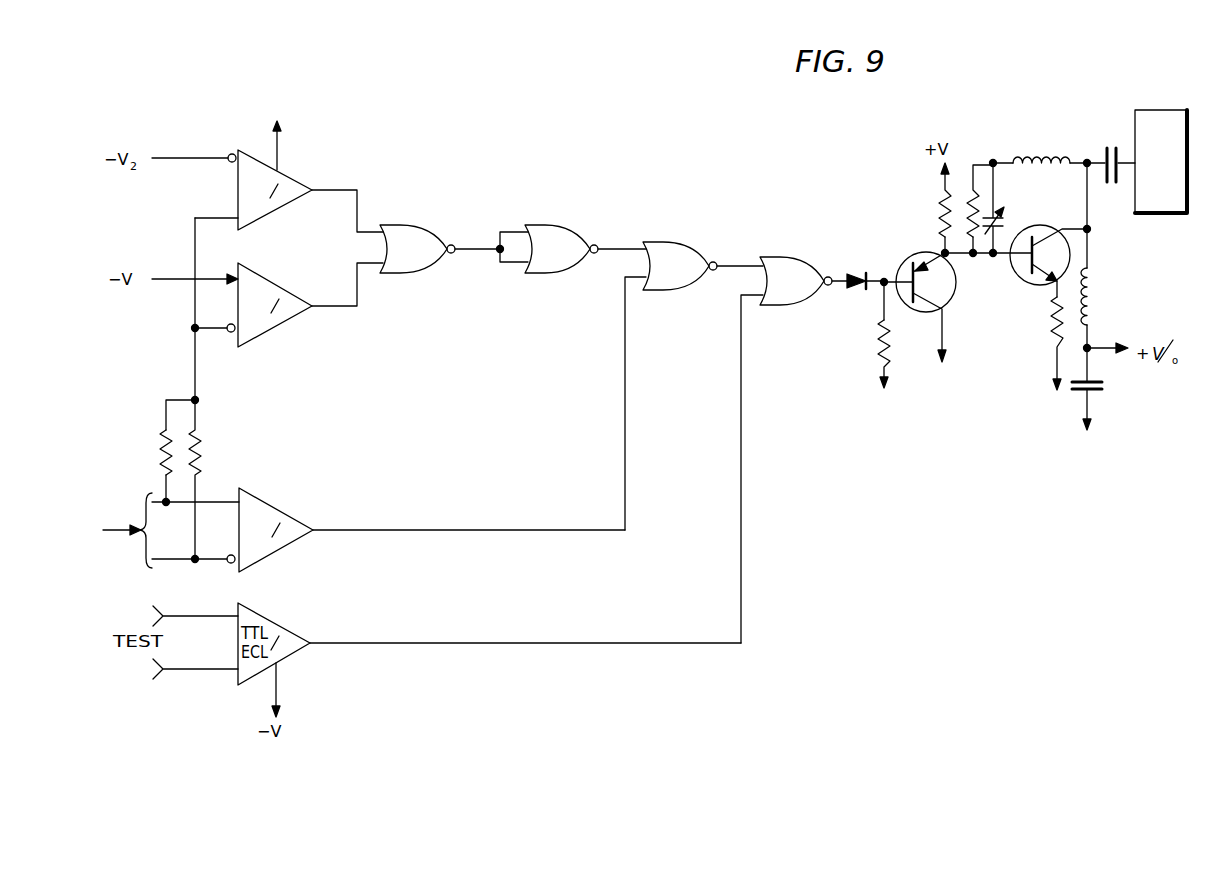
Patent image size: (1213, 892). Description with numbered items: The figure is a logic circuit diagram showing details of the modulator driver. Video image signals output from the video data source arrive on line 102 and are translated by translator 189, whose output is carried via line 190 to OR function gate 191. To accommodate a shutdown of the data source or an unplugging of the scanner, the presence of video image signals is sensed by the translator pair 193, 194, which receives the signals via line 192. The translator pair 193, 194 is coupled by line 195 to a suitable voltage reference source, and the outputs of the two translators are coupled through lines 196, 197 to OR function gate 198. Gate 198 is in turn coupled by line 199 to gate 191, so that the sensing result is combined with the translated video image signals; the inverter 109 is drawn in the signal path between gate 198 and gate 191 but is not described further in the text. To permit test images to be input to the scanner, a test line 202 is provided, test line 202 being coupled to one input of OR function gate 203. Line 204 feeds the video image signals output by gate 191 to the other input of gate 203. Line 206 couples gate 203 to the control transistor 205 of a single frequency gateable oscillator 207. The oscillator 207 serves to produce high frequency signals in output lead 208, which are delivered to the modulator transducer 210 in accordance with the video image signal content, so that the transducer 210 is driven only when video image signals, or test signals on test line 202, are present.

The line 102 is at (120, 538).
The inverter 109 is at (567, 211).
The translator 189 is at (284, 512).
The line 190 is at (432, 531).
The OR function gate 191 is at (693, 245).
The line 192 is at (196, 385).
The translator 193 is at (289, 177).
The translator 194 is at (282, 323).
The line 195 is at (188, 281).
The line 196 is at (358, 205).
The line 197 is at (358, 290).
The OR function gate 198 is at (432, 231).
The line 199 is at (477, 252).
The test line 202 is at (432, 646).
The OR function gate 203 is at (825, 261).
The line 204 is at (738, 262).
The control transistor 205 is at (912, 256).
The line 206 is at (838, 288).
The single frequency gateable oscillator 207 is at (1017, 114).
The output lead 208 is at (1125, 160).
The modulator transducer 210 is at (1148, 110).